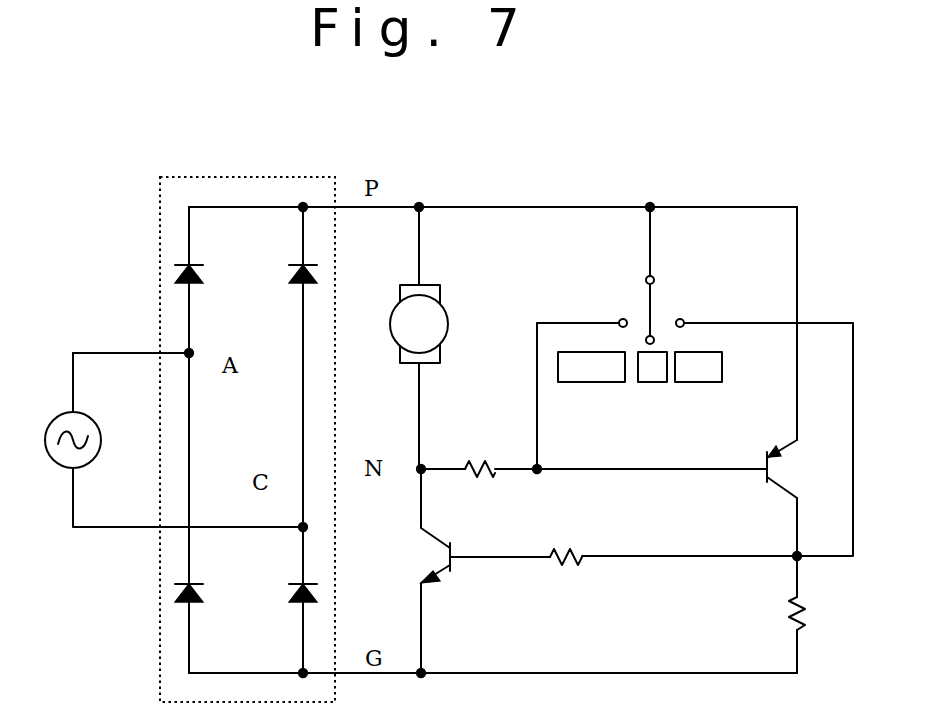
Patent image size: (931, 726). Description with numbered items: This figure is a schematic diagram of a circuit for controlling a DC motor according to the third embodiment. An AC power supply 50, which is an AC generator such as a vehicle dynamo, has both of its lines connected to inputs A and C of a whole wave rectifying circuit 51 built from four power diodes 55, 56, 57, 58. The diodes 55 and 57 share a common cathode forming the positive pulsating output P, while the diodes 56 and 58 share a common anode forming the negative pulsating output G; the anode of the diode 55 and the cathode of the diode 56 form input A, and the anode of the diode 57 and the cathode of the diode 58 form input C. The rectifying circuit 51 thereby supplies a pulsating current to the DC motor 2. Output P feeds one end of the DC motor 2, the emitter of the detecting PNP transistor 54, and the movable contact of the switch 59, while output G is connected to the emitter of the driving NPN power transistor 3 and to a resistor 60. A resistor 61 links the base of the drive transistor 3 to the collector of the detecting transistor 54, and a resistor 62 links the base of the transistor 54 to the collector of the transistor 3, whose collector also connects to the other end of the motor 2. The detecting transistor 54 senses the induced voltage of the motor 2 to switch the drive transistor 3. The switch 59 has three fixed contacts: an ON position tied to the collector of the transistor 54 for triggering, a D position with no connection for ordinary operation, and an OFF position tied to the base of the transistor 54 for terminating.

The DC motor 2 is at (430, 285).
The drive transistor 3 is at (454, 565).
The AC power supply 50 is at (60, 470).
The rectifying circuit 51 is at (158, 236).
The detecting transistor 54 is at (783, 486).
The power diode 55 is at (191, 264).
The power diode 56 is at (191, 583).
The power diode 57 is at (296, 284).
The power diode 58 is at (299, 603).
The switch 59 is at (665, 300).
The resistor 60 is at (790, 610).
The resistor 61 is at (578, 561).
The resistor 62 is at (474, 462).